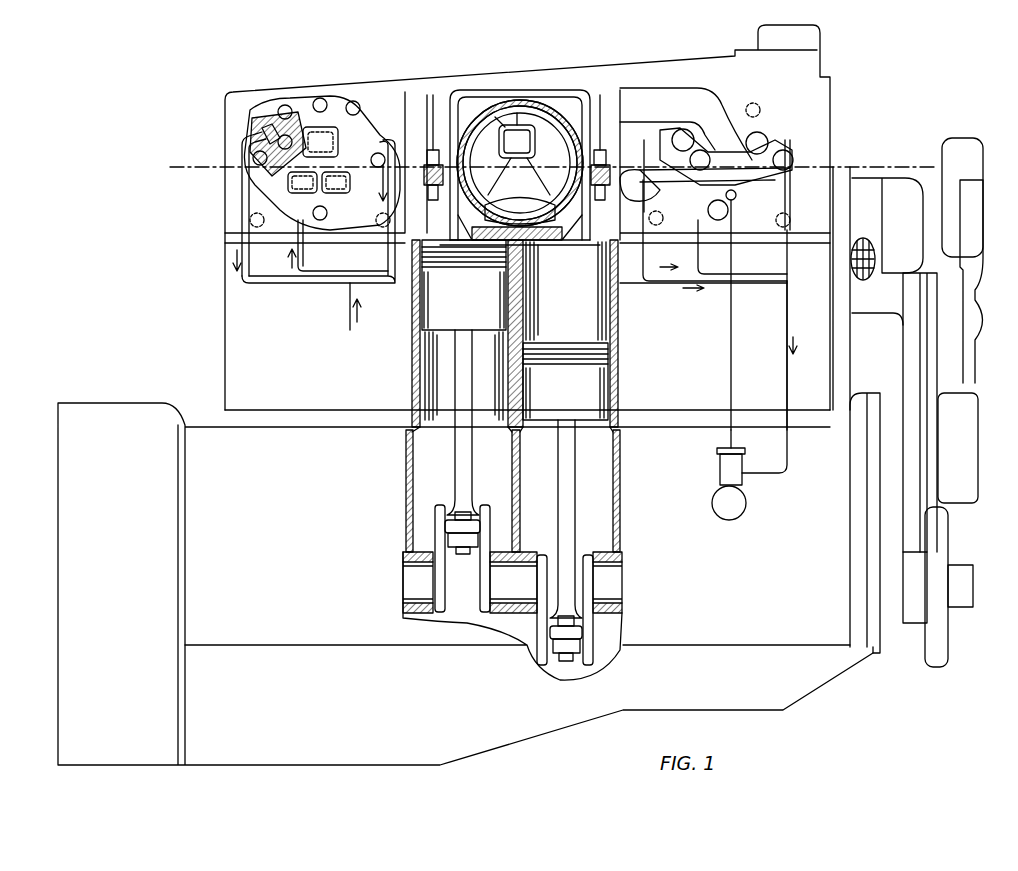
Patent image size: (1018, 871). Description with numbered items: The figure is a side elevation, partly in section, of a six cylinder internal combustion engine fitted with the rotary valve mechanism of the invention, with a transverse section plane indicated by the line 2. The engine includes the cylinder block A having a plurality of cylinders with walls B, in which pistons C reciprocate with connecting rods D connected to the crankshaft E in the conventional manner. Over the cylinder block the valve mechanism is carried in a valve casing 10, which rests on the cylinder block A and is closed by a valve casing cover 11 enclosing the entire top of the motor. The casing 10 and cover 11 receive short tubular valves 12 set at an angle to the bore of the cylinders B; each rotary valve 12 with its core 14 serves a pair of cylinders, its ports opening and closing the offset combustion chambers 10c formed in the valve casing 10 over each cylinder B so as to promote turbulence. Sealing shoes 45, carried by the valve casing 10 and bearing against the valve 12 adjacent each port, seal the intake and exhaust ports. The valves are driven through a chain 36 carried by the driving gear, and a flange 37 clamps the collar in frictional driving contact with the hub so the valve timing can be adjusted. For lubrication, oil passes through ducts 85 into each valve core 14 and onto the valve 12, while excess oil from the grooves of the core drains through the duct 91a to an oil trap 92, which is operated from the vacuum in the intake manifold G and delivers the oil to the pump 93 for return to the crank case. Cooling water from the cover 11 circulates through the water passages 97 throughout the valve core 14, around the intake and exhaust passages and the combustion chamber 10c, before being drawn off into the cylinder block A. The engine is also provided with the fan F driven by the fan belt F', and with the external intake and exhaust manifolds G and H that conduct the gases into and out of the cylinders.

The section line 2 is at (182, 158).
The valve casing 10 is at (228, 213).
The combustion chamber 10c is at (447, 237).
The valve casing cover 11 is at (232, 132).
The tubular valve 12 is at (605, 236).
The valve core 14 is at (322, 204).
The chain 36 is at (875, 257).
The flange 37 is at (258, 142).
The sealing shoe 45 is at (452, 180).
The oil duct 85 is at (350, 323).
The oil duct 91a is at (788, 278).
The oil trap 92 is at (718, 477).
The pump 93 is at (712, 508).
The water passage 97 is at (490, 137).
The cylinder block A is at (225, 338).
The cylinder wall B is at (418, 386).
The piston C is at (598, 386).
The connecting rod D is at (576, 487).
The crankshaft E is at (612, 586).
The fan F is at (960, 309).
The fan belt F' is at (950, 470).
The intake manifold G is at (735, 198).
The exhaust manifold H is at (727, 120).